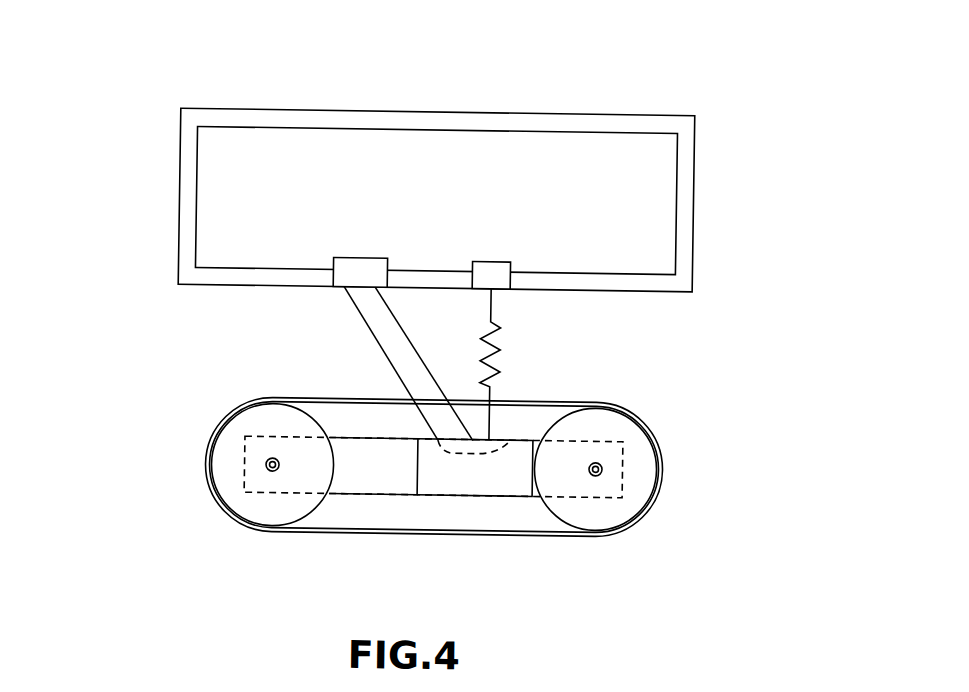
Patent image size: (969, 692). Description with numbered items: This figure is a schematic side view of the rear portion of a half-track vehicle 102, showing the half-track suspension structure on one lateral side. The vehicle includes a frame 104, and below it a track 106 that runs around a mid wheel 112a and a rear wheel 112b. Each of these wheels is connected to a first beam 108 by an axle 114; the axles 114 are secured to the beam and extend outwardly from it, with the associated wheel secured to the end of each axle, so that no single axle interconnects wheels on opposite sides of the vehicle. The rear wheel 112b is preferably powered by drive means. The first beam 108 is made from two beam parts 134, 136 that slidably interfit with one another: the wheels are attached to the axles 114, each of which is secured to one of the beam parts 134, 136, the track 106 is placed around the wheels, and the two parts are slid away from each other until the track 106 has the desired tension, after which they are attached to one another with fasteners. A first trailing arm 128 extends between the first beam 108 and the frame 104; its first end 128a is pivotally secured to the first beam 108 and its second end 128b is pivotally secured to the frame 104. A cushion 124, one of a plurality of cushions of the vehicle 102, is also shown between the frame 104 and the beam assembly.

The half-track vehicle 102 is at (490, 90).
The frame 104 is at (691, 243).
The track 106 is at (288, 400).
The first beam 108 is at (452, 518).
The mid wheel 112a is at (265, 523).
The rear wheel 112b is at (643, 492).
The axle 114 is at (268, 467).
The cushion 124 is at (500, 342).
The first trailing arm 128 is at (384, 356).
The first end 128a is at (512, 440).
The second end 128b is at (344, 292).
The beam part 134 is at (370, 495).
The beam part 136 is at (518, 495).